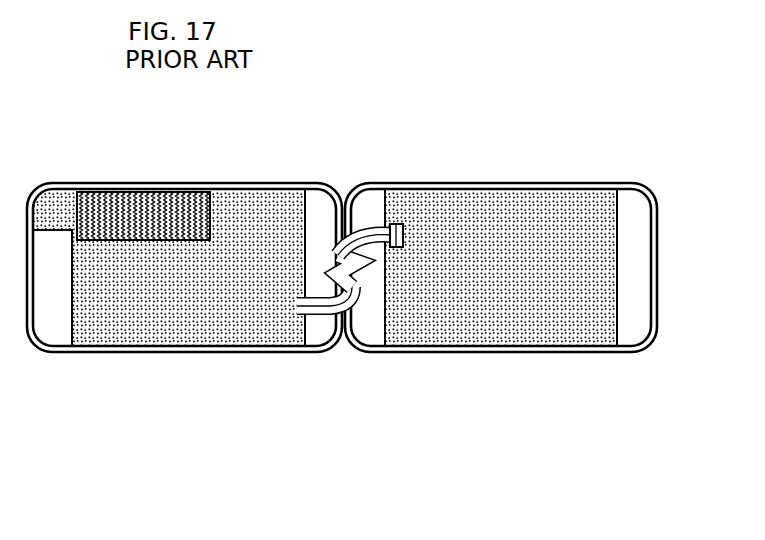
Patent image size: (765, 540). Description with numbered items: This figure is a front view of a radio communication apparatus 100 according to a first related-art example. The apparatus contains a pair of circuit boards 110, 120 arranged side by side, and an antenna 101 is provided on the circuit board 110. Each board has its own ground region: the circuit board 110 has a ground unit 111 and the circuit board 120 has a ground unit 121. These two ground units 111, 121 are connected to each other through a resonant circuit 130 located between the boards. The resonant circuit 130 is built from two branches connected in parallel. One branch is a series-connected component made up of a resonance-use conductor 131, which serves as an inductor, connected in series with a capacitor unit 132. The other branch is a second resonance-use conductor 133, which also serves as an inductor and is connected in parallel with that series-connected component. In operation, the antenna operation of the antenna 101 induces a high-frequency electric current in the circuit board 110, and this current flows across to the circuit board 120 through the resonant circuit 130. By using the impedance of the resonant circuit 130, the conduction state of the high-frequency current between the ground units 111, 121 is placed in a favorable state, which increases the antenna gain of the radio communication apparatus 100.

The radio communication apparatus 100 is at (559, 150).
The antenna 101 is at (113, 190).
The circuit board 110 is at (233, 184).
The ground unit 111 is at (283, 210).
The circuit board 120 is at (473, 191).
The ground unit 121 is at (585, 210).
The resonant circuit 130 is at (460, 440).
The resonance-use conductor 131 is at (365, 258).
The capacitor unit 132 is at (400, 245).
The resonance-use conductor 133 is at (305, 318).